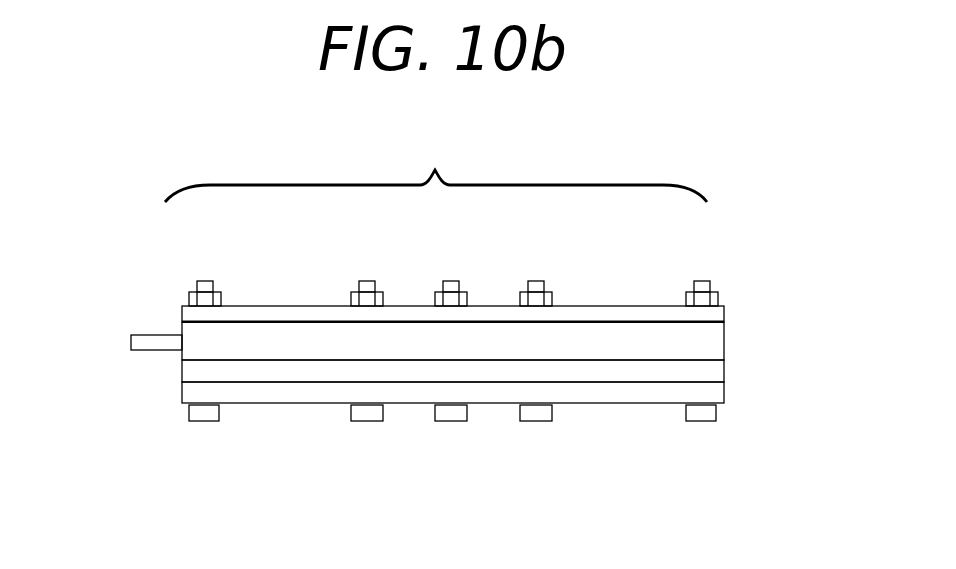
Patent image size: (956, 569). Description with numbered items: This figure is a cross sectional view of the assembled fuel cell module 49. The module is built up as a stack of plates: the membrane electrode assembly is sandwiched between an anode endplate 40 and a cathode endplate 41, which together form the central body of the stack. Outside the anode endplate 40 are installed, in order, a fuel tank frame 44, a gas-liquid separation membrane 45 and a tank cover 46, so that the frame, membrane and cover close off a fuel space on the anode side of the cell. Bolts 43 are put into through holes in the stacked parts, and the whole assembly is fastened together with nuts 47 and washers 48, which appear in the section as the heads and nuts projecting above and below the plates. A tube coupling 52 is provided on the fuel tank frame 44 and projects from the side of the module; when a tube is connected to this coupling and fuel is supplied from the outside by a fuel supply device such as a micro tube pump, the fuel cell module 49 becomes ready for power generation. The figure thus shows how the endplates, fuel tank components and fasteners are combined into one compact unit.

The fuel cell module 49 is at (438, 339).
The tank cover 46 is at (712, 312).
The gas-liquid separation membrane 45 is at (719, 321).
The fuel tank frame 44 is at (708, 347).
The anode endplate 40 is at (653, 370).
The cathode endplate 41 is at (582, 393).
The tube coupling 52 is at (150, 340).
The nut 47 is at (213, 295).
The washer 48 is at (193, 305).
The bolt 43 is at (202, 415).